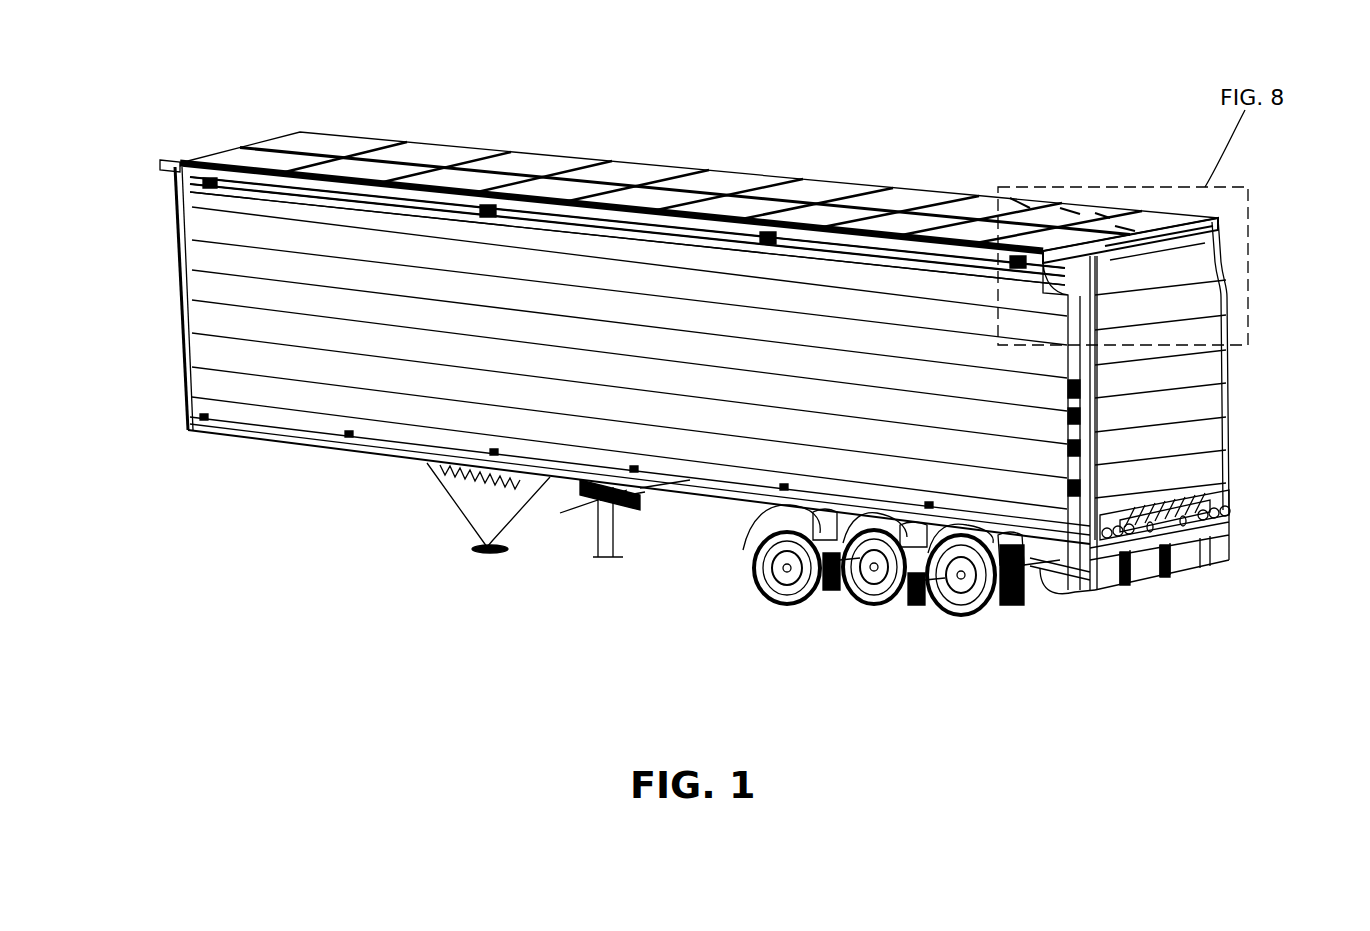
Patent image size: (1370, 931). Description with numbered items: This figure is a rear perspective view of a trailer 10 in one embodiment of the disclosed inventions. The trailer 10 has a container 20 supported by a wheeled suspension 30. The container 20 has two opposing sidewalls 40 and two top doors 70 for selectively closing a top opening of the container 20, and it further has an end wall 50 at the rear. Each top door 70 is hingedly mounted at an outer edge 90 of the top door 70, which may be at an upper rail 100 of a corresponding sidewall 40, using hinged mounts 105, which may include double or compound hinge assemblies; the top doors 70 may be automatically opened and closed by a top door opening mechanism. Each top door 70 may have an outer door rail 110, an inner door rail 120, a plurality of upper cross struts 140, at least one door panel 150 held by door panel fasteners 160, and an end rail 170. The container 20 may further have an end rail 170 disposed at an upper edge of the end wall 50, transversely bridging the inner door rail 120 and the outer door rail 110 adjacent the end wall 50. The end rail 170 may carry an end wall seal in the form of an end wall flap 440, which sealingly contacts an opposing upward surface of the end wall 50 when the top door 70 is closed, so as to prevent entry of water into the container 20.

The trailer 10 is at (757, 108).
The container 20 is at (172, 325).
The wheeled suspension 30 is at (838, 655).
The sidewall 40 is at (283, 392).
The end wall 50 is at (1180, 388).
The top door 70 is at (240, 155).
The outer edge 90 is at (165, 165).
The upper rail 100 is at (273, 190).
The hinged mount 105 is at (207, 190).
The outer door rail 110 is at (395, 178).
The inner door rail 120 is at (1125, 230).
The upper cross strut 140 is at (1100, 218).
The door panel 150 is at (1068, 213).
The door panel fastener 160 is at (1020, 205).
The end rail 170 is at (1225, 235).
The end wall flap 440 is at (1180, 247).